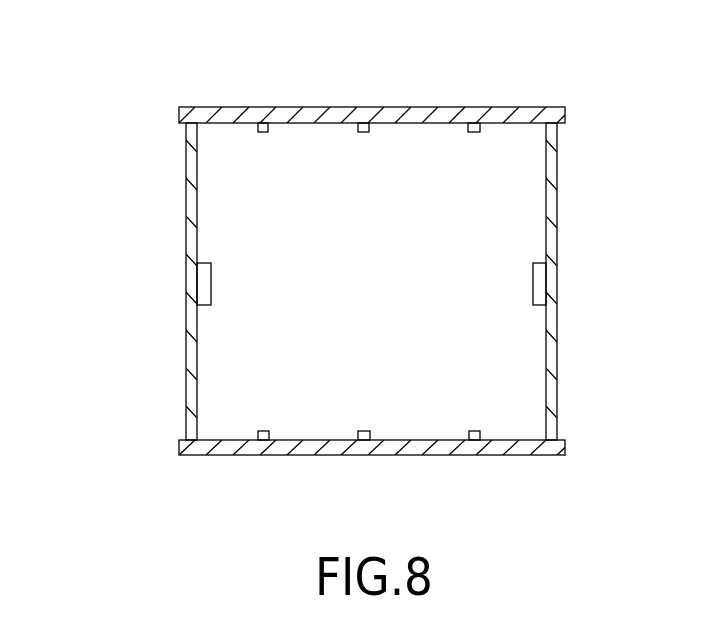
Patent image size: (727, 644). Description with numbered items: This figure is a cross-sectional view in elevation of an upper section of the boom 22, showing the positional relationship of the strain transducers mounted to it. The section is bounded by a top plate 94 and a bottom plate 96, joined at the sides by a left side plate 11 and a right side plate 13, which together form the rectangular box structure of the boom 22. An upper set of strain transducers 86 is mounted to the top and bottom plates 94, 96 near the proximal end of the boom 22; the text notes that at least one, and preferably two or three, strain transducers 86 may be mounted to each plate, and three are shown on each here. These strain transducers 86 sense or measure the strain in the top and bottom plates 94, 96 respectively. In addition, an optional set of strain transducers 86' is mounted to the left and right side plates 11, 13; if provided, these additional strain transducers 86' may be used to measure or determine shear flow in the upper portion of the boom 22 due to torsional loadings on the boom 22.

The boom 22 is at (124, 80).
The top plate 94 is at (460, 107).
The bottom plate 96 is at (295, 456).
The left side plate 11 is at (186, 352).
The right side plate 13 is at (557, 340).
The strain transducers 86 is at (369, 281).
The strain transducers 86' is at (371, 284).